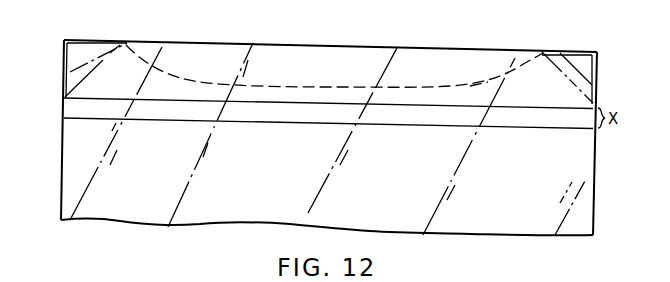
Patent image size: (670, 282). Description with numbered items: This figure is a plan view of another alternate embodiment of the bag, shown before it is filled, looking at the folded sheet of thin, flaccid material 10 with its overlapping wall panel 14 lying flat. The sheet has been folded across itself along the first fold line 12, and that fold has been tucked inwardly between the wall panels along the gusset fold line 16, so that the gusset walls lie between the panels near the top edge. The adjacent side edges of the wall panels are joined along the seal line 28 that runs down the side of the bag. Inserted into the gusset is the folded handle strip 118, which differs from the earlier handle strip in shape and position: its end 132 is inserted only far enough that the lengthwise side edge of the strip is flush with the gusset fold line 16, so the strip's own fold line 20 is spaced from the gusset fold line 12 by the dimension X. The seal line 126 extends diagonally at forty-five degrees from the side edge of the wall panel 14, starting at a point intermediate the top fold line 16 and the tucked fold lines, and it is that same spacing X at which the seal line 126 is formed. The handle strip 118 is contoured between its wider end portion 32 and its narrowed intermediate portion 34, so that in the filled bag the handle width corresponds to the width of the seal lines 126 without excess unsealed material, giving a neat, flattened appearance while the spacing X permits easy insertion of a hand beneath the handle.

The sheet of thin, flaccid material 10 is at (525, 244).
The first fold line 12 is at (297, 122).
The wall panel 14 is at (582, 177).
The fold line 16 is at (456, 48).
The fold line 20 is at (247, 100).
The seal line 28 is at (61, 207).
The end portion 32 is at (577, 52).
The intermediate portion 34 is at (207, 65).
The handle strip 118 is at (493, 76).
The seal line 126 is at (96, 50).
The end 132 is at (66, 52).